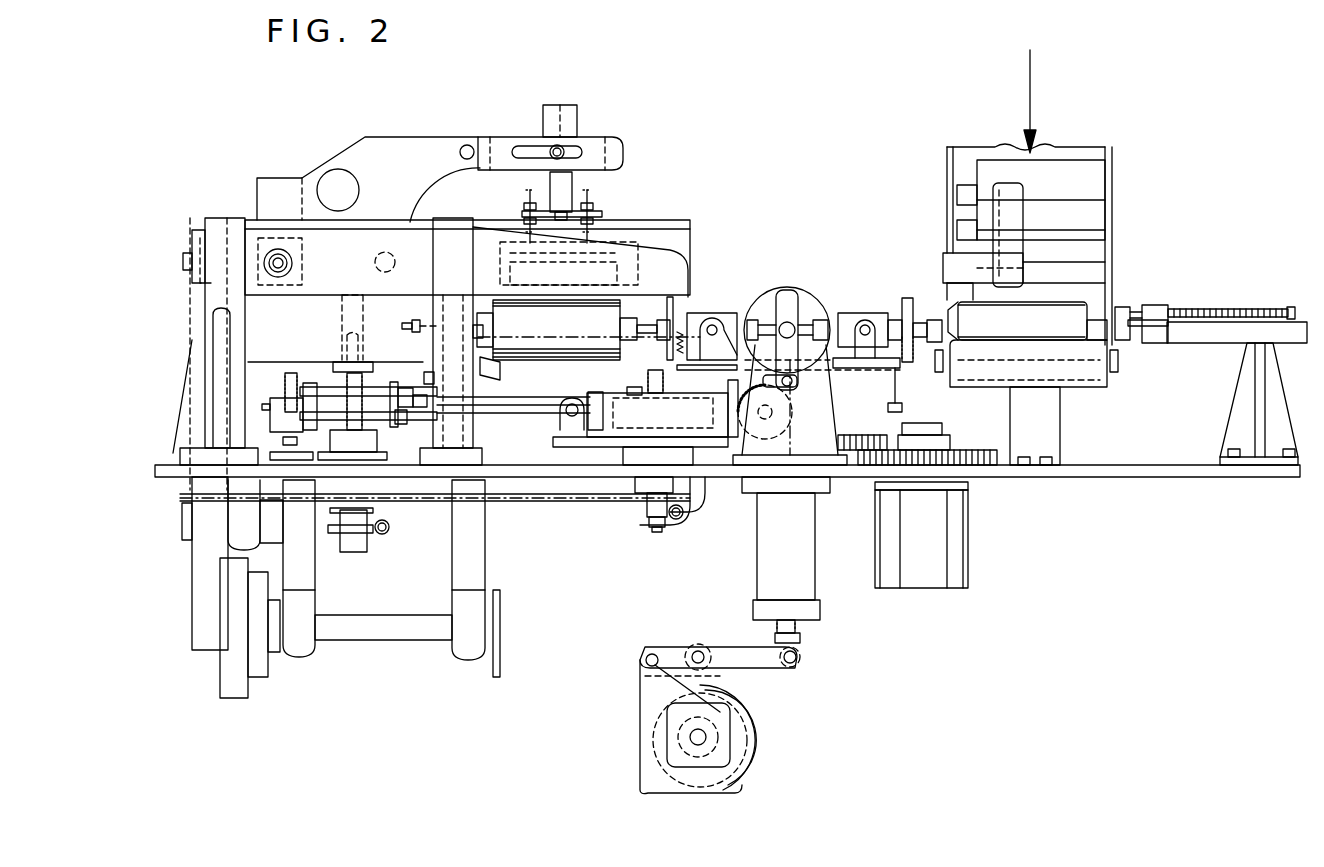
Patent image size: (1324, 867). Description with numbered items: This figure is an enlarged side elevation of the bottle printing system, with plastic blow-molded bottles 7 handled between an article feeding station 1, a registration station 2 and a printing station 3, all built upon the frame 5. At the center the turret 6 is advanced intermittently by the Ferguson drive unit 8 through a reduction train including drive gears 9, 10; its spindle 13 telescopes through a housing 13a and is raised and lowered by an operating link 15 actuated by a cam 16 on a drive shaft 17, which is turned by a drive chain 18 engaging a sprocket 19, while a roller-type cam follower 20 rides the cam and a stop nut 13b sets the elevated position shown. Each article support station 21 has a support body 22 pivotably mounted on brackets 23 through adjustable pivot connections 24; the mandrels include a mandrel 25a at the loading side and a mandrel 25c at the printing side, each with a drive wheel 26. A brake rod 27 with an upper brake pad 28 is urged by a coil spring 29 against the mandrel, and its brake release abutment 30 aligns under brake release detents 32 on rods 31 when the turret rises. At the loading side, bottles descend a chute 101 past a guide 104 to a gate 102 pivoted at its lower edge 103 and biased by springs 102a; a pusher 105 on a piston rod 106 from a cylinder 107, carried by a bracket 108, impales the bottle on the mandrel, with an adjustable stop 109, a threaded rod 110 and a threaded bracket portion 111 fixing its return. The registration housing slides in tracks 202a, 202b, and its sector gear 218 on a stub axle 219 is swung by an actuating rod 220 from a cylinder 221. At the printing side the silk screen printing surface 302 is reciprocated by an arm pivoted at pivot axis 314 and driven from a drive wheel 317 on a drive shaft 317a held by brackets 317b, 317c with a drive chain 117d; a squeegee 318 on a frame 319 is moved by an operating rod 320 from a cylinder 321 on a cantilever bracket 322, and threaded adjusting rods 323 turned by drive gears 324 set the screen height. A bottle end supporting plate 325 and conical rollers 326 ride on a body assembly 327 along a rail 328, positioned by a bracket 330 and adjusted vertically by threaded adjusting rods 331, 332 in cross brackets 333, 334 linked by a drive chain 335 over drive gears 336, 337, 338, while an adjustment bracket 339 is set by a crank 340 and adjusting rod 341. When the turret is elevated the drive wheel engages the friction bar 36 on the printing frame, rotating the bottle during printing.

The article feeding station 1 is at (928, 245).
The registration station 2 is at (795, 290).
The printing station 3 is at (680, 218).
The frame 5 is at (1028, 477).
The turret 6 is at (890, 366).
The bottles 7 is at (1085, 150).
The Ferguson drive unit 8 is at (912, 542).
The drive gear 9 is at (978, 450).
The drive gear 10 is at (875, 448).
The turret spindle 13 is at (800, 650).
The housing 13a is at (815, 550).
The stop nut 13b is at (800, 632).
The operating link 15 is at (720, 640).
The cam 16 is at (750, 712).
The drive shaft 17 is at (690, 737).
The drive chain 18 is at (660, 722).
The sprocket 19 is at (740, 742).
The roller-type cam follower 20 is at (697, 648).
The article support station 21 is at (740, 310).
The support body 22 is at (878, 313).
The brackets 23 is at (705, 359).
The adjustable pivot connections 24 is at (712, 325).
The mandrel 25a is at (935, 330).
The mandrel 25c is at (648, 292).
The drive wheel 26 is at (705, 300).
The brake rod 27 is at (892, 395).
The upper brake pad 28 is at (700, 300).
The coil spring 29 is at (668, 342).
The brake release abutment 30 is at (900, 400).
The rods 31 is at (705, 470).
The brake release detents 32 is at (663, 420).
The friction bar 36 is at (690, 285).
The chute 101 is at (1115, 165).
The gate 102 is at (1095, 378).
The springs 102a is at (938, 372).
The lower edge 103 is at (1075, 387).
The guide 104 is at (1020, 212).
The pusher 105 is at (1098, 328).
The piston rod 106 is at (1140, 325).
The cylinder 107 is at (1210, 343).
The bracket 108 is at (1262, 410).
The adjustable stop 109 is at (1125, 305).
The screw 110 is at (1225, 309).
The threaded bracket portion 111 is at (1160, 305).
The plate 117d is at (500, 632).
The track 202a is at (722, 457).
The track 202b is at (853, 470).
The sector gear 218 is at (790, 406).
The stub axle 219 is at (780, 445).
The actuating rod 220 is at (762, 418).
The cylinder 221 is at (612, 462).
The silk screen printing surface 302 is at (560, 298).
The pivot axis 314 is at (182, 520).
The drive wheel 317 is at (222, 685).
The drive shaft 317a is at (378, 640).
The bracket 317b is at (315, 595).
The bracket 317c is at (455, 585).
The squeegee 318 is at (632, 253).
The frame 319 is at (565, 210).
The operating rod 320 is at (572, 180).
The cylinder 321 is at (558, 105).
The cantilever bracket 322 is at (408, 135).
The threaded adjusting rods 323 is at (352, 385).
The drive gears 324 is at (385, 535).
The bottle end supporting plate 325 is at (491, 320).
The conical rollers 326 is at (493, 340).
The body assembly 327 is at (428, 372).
The rail 328 is at (503, 390).
The bracket 330 is at (372, 393).
The threaded adjusting rod 331 is at (292, 373).
The threaded adjusting rod 332 is at (650, 381).
The cross bracket 333 is at (312, 428).
The cross bracket 334 is at (625, 390).
The drive chain 335 is at (528, 503).
The drive gear 336 is at (268, 500).
The drive gear 337 is at (665, 522).
The drive gear 338 is at (645, 517).
The adjustment bracket 339 is at (393, 425).
The crank 340 is at (272, 420).
The adjusting rod 341 is at (530, 420).